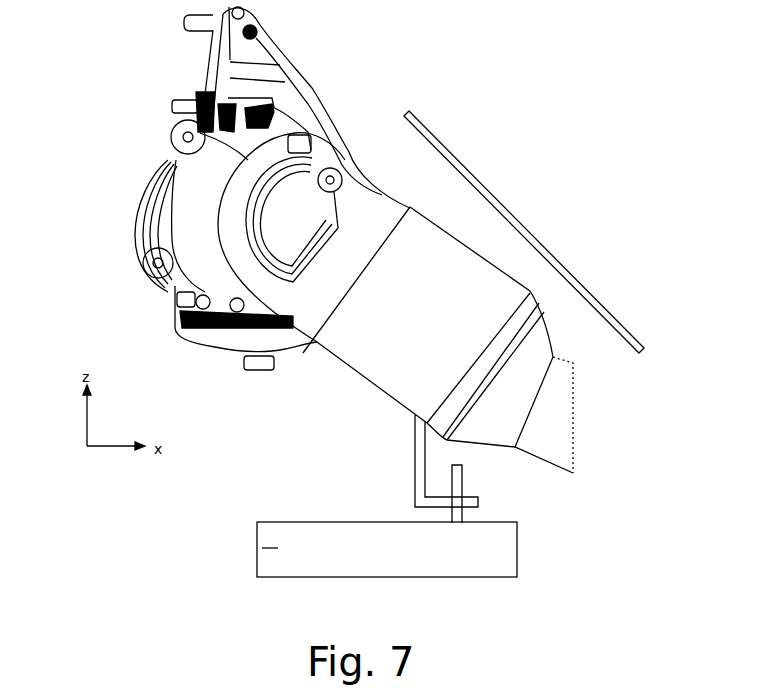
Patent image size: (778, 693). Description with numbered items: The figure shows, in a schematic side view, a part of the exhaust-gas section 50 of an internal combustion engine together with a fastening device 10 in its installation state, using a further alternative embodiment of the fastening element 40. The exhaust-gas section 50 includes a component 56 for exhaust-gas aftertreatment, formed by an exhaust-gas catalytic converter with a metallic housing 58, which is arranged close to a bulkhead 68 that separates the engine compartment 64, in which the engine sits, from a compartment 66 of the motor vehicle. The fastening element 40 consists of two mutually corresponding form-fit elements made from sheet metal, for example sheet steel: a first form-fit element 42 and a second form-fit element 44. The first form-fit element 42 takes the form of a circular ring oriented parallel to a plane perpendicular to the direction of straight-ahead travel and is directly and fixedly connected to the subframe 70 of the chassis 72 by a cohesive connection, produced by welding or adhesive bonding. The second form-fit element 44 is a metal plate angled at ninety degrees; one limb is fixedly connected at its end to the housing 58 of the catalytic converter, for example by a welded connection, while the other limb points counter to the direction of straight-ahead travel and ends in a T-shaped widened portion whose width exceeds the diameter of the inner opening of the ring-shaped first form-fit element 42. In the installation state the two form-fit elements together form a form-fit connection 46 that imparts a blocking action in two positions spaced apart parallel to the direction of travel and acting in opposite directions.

The fastening device 10 is at (614, 504).
The fastening element 40 is at (339, 441).
The first form-fit element 42 is at (464, 470).
The second form-fit element 44 is at (417, 468).
The form-fit connection 46 is at (433, 532).
The exhaust-gas section 50 is at (137, 62).
The component for exhaust-gas aftertreatment 56 is at (437, 219).
The metallic housing 58 is at (488, 262).
The engine compartment 64 is at (156, 226).
The compartment 66 is at (524, 232).
The bulkhead 68 is at (608, 308).
The subframe 70 is at (257, 556).
The chassis 72 is at (515, 587).